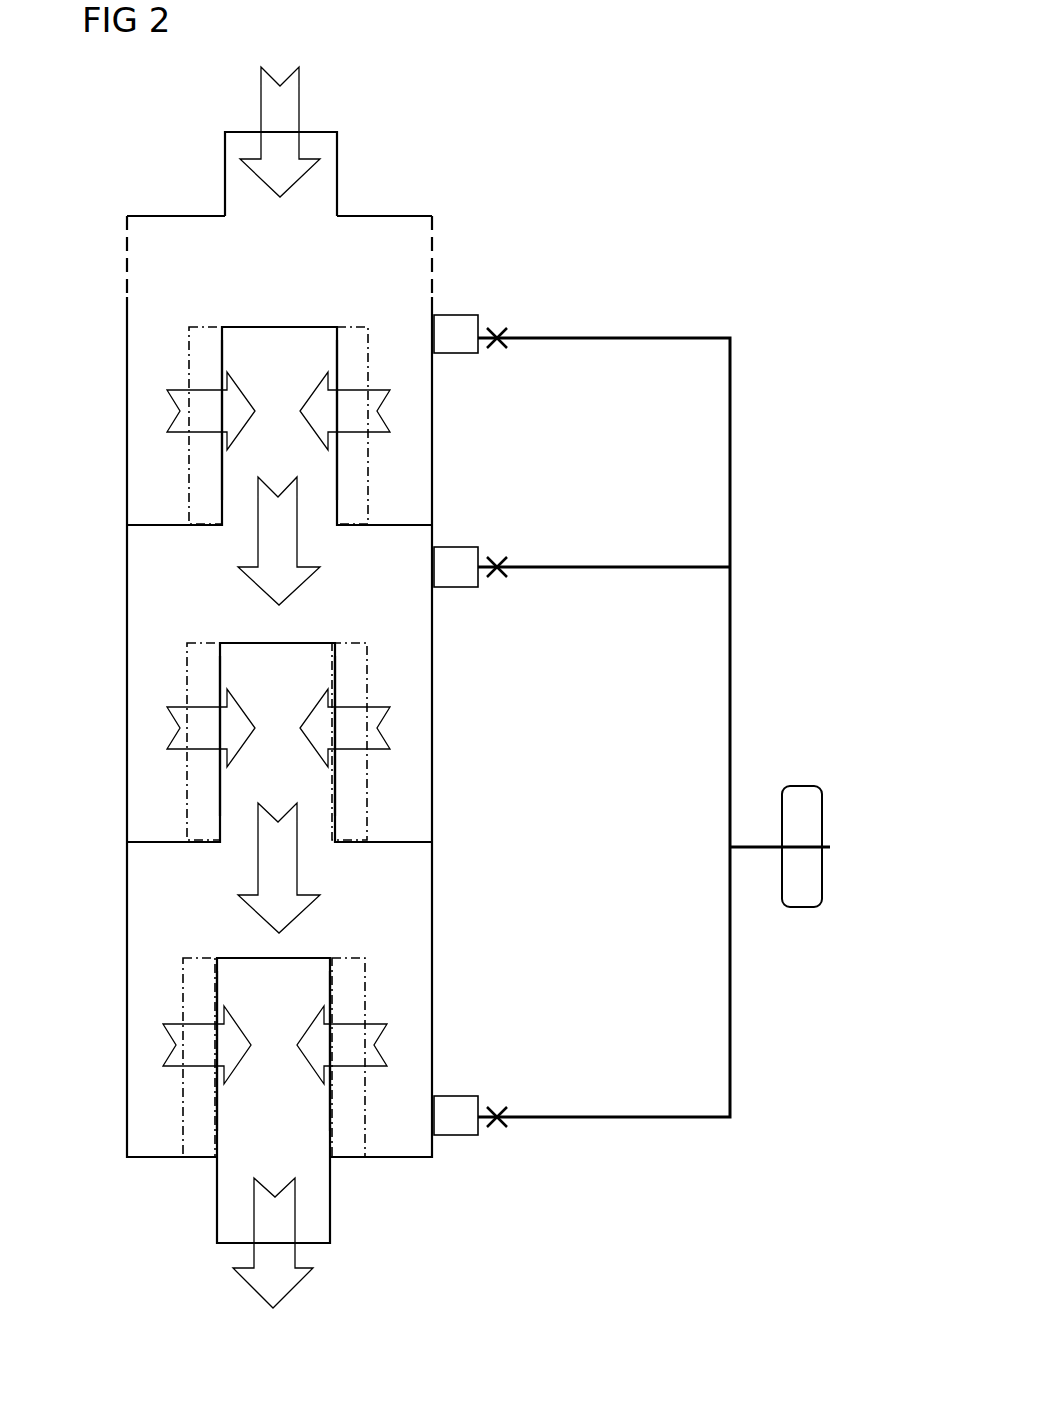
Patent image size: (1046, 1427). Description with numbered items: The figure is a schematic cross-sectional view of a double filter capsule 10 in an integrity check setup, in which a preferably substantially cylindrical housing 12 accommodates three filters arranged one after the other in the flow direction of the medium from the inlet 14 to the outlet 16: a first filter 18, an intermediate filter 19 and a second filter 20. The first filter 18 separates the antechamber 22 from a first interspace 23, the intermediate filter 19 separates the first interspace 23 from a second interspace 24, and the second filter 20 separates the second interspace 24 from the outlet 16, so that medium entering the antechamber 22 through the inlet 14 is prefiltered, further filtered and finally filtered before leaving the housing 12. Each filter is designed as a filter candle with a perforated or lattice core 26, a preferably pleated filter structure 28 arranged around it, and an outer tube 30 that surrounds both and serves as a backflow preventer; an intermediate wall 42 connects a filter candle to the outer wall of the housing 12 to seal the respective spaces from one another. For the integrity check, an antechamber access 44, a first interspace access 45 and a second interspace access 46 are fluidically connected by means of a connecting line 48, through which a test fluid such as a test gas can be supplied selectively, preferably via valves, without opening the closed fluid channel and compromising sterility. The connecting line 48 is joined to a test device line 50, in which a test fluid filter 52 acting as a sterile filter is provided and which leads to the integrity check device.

The double filter capsule 10 is at (110, 181).
The housing 12 is at (434, 690).
The inlet 14 is at (337, 148).
The outlet 16 is at (330, 1218).
The first filter 18 is at (353, 311).
The intermediate filter 19 is at (351, 630).
The second filter 20 is at (349, 937).
The antechamber 22 is at (176, 278).
The first interspace 23 is at (176, 615).
The second interspace 24 is at (176, 930).
The core 26 is at (226, 355).
The filter structure 28 is at (195, 512).
The outer tube 30 is at (186, 356).
The intermediate wall 42 is at (150, 527).
The antechamber access 44 is at (462, 355).
The first interspace access 45 is at (462, 580).
The second interspace access 46 is at (452, 1131).
The connecting line 48 is at (732, 1063).
The test device line 50 is at (735, 850).
The test fluid filter 52 is at (812, 888).